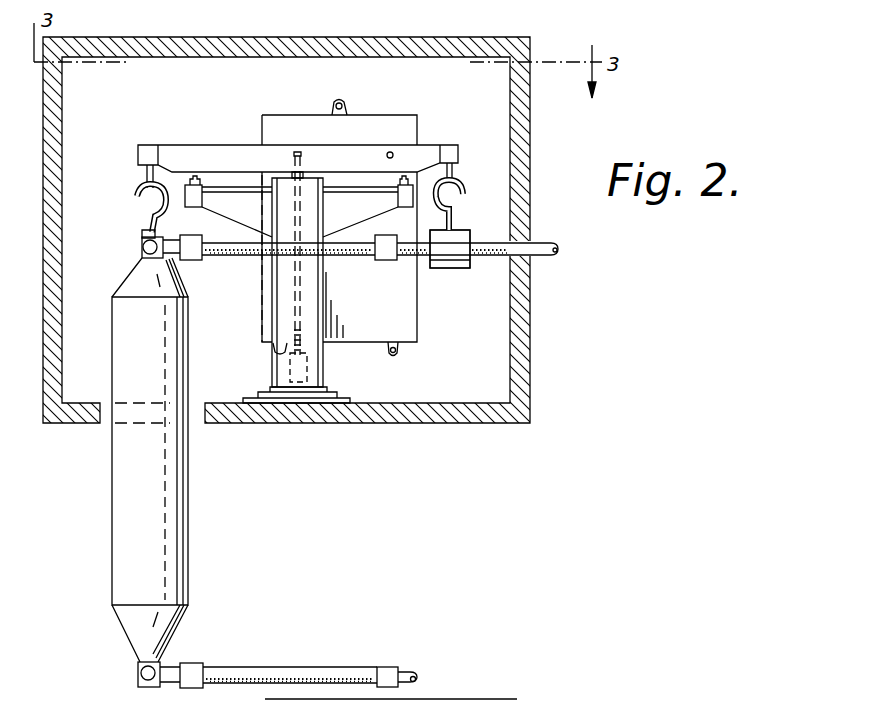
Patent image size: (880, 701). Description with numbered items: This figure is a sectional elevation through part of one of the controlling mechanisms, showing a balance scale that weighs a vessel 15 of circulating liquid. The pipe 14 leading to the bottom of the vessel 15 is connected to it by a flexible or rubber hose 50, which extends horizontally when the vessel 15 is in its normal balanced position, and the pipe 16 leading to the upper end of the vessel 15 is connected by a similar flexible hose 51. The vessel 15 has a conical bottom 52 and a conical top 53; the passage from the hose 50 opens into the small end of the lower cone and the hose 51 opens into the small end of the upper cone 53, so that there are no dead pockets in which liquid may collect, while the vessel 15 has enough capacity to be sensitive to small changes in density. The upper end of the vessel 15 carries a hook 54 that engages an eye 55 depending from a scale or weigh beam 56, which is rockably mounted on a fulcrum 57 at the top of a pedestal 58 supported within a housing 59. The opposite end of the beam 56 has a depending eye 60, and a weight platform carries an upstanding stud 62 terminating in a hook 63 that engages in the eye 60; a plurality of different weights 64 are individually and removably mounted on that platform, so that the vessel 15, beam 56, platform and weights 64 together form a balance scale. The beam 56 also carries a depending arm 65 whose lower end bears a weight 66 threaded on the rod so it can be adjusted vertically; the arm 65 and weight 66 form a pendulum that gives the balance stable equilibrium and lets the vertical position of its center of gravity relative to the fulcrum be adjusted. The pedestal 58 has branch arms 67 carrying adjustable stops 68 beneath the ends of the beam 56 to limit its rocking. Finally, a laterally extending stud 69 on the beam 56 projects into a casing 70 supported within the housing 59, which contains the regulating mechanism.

The pipe 14 is at (404, 670).
The vessel 15 is at (189, 542).
The pipe 16 is at (556, 257).
The flexible hose 50 is at (280, 670).
The flexible hose 51 is at (347, 257).
The conical bottom 52 is at (130, 627).
The conical top 53 is at (122, 279).
The hook 54 is at (132, 193).
The eye 55 is at (147, 170).
The weigh beam 56 is at (246, 147).
The fulcrum 57 is at (310, 171).
The pedestal 58 is at (277, 289).
The housing 59 is at (530, 110).
The eye 60 is at (452, 171).
The stud 62 is at (446, 204).
The hook 63 is at (462, 182).
The weights 64 is at (460, 231).
The depending arm 65 is at (302, 300).
The weight 66 is at (307, 363).
The branch arms 67 is at (210, 183).
The adjustable stops 68 is at (195, 180).
The stud 69 is at (355, 183).
The casing 70 is at (276, 117).